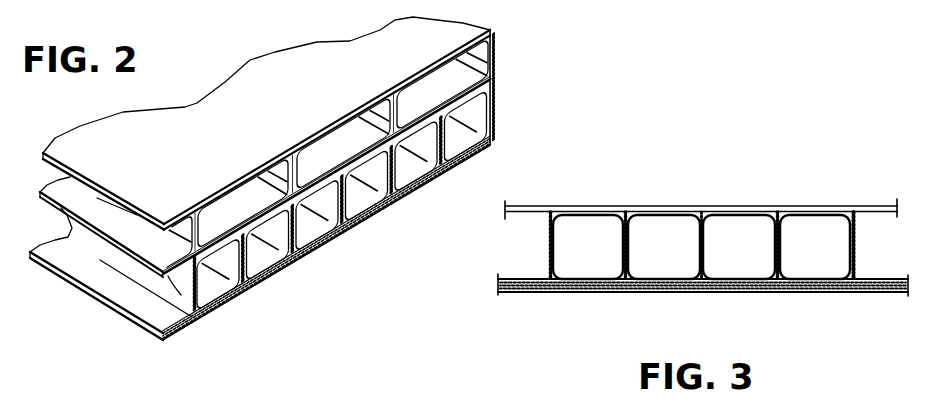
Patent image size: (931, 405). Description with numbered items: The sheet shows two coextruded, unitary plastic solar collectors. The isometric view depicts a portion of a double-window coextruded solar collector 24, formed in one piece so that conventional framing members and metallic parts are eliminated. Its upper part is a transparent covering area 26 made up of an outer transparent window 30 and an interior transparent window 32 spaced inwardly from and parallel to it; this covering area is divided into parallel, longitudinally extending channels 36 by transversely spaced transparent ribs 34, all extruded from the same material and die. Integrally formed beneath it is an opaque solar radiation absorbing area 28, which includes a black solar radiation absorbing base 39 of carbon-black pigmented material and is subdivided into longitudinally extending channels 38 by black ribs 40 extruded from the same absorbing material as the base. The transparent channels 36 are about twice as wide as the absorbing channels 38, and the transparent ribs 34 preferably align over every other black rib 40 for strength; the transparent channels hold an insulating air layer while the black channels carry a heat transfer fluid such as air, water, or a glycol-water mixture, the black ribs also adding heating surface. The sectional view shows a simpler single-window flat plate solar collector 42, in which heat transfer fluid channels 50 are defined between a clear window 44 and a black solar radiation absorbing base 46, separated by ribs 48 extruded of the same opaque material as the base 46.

In FIG. 2, the coextruded solar collector 24 is at (326, 242).
In FIG. 2, the transparent covering area 26 is at (172, 212).
In FIG. 2, the solar radiation absorbing area 28 is at (137, 207).
In FIG. 2, the outer transparent window 30 is at (351, 203).
In FIG. 2, the interior transparent window 32 is at (418, 113).
In FIG. 2, the transparent ribs 34 is at (360, 118).
In FIG. 2, the channels 36 is at (327, 152).
In FIG. 2, the channels 38 is at (404, 175).
In FIG. 2, the solar radiation absorbing base 39 is at (317, 250).
In FIG. 2, the ribs 40 is at (240, 273).
In FIG. 3, the flat plate solar collector 42 is at (648, 295).
In FIG. 3, the clear window 44 is at (805, 205).
In FIG. 3, the solar radiation absorbing base 46 is at (738, 288).
In FIG. 3, the ribs 48 is at (557, 262).
In FIG. 3, the heat transfer fluid channels 50 is at (600, 232).